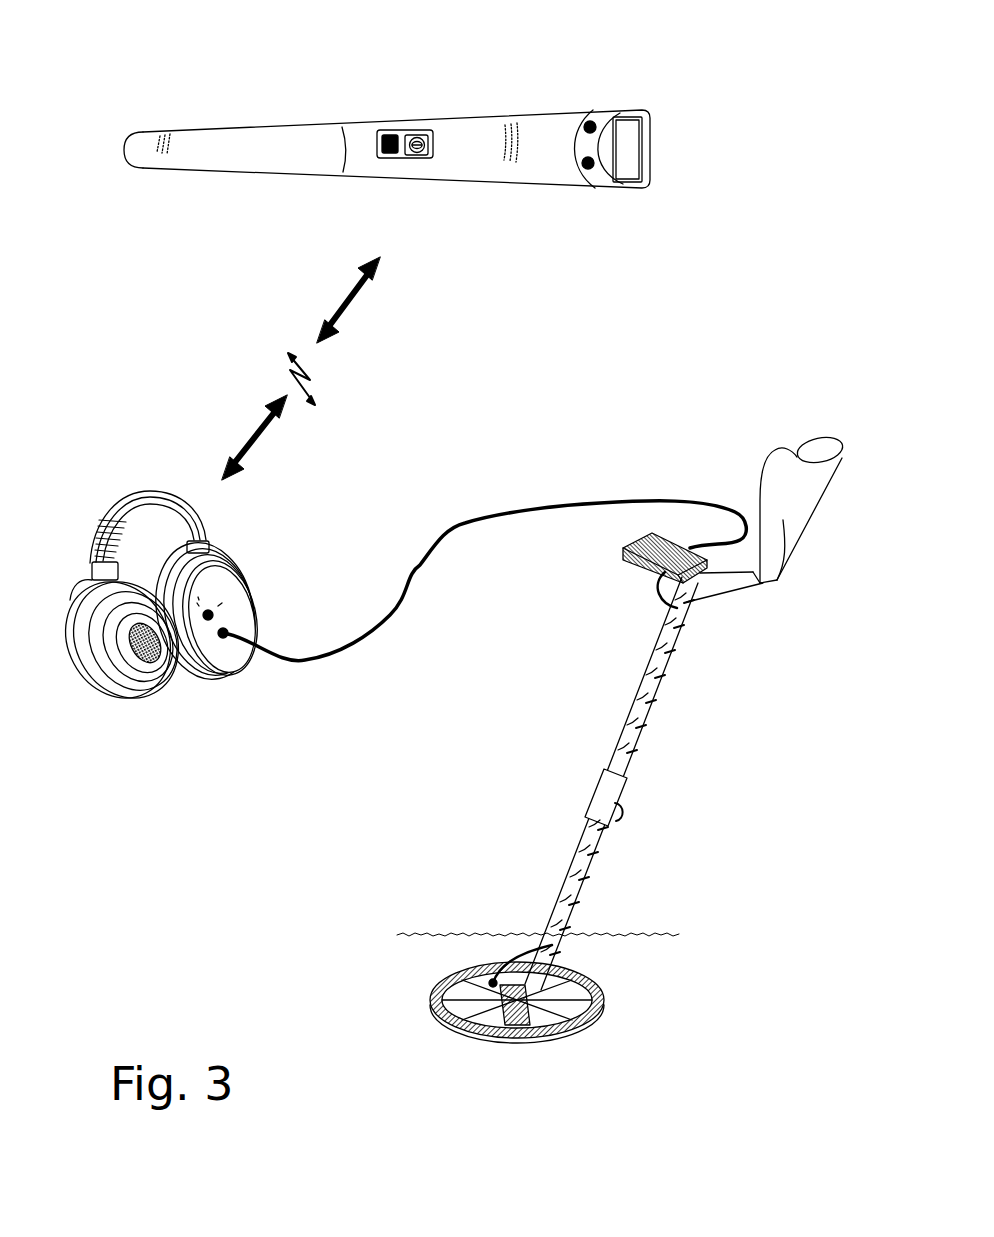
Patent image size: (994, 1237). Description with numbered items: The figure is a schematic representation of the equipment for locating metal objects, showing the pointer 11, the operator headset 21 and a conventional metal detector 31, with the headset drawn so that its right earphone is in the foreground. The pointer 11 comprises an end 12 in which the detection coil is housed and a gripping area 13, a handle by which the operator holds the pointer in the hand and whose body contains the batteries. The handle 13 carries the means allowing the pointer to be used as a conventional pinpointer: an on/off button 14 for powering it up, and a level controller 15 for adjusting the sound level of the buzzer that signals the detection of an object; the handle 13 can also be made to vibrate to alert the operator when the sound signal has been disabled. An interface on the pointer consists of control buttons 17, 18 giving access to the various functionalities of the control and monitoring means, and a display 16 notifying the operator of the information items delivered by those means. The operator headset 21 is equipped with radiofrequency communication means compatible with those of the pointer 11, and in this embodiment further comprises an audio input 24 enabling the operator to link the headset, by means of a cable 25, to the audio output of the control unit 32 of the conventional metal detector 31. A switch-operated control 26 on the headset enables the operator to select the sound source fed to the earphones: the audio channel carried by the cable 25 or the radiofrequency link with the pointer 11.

The pointer 11 is at (214, 63).
The end 12 is at (228, 171).
The gripping area 13 is at (490, 185).
The on/off button 14 is at (412, 158).
The level controller 15 is at (396, 133).
The display 16 is at (627, 112).
The control button 17 is at (583, 108).
The control button 18 is at (590, 188).
The operator headset 21 is at (98, 472).
The audio input 24 is at (219, 639).
The cable 25 is at (482, 518).
The switch-operated control 26 is at (214, 614).
The metal detector 31 is at (442, 832).
The control unit 32 is at (642, 568).